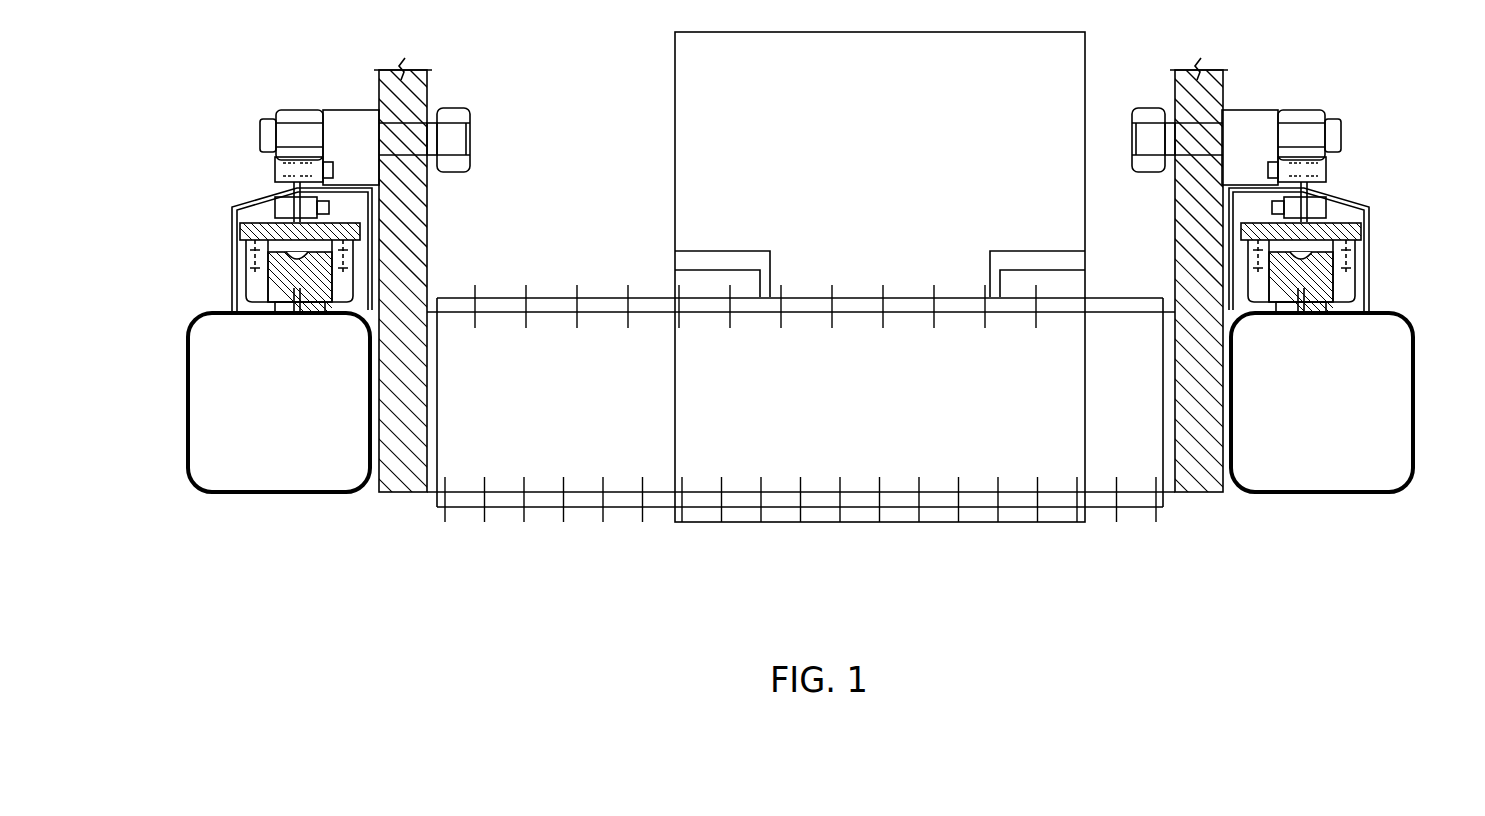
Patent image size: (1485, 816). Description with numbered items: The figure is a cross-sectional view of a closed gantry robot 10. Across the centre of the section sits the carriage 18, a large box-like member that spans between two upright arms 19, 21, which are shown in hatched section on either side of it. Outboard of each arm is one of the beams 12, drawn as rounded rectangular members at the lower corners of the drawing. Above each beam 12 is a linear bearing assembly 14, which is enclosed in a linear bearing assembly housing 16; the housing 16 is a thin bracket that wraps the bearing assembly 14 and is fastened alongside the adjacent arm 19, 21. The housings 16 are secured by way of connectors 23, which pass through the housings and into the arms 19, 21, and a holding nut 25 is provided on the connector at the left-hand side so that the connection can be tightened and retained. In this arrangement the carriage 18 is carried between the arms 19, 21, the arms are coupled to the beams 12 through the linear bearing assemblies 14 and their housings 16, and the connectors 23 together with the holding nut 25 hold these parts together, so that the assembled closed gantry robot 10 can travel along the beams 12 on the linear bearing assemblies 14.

The closed gantry robot 10 is at (228, 517).
The beams 12 is at (200, 323).
The linear bearing assemblies 14 is at (243, 257).
The linear bearing assembly housings 16 is at (260, 198).
The carriage 18 is at (850, 401).
The arm 19 is at (1178, 217).
The arm 21 is at (428, 223).
The connectors 23 is at (275, 170).
The holding nut 25 is at (265, 120).